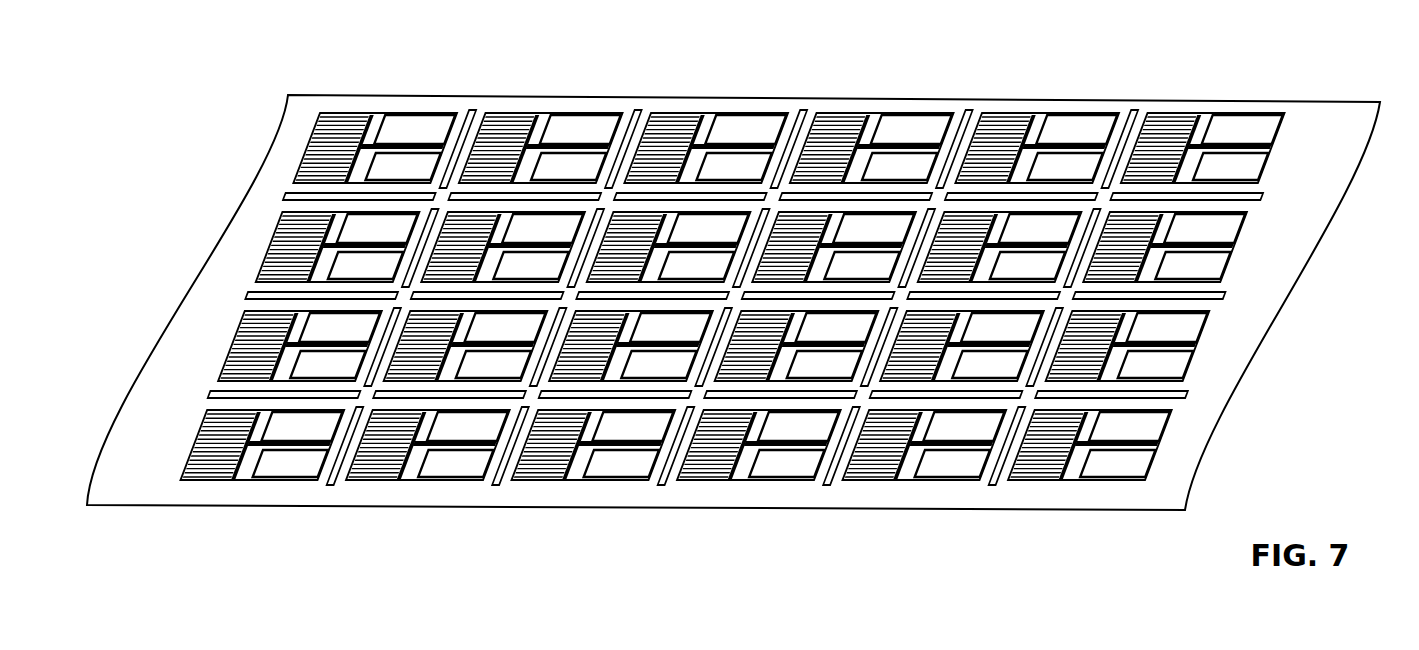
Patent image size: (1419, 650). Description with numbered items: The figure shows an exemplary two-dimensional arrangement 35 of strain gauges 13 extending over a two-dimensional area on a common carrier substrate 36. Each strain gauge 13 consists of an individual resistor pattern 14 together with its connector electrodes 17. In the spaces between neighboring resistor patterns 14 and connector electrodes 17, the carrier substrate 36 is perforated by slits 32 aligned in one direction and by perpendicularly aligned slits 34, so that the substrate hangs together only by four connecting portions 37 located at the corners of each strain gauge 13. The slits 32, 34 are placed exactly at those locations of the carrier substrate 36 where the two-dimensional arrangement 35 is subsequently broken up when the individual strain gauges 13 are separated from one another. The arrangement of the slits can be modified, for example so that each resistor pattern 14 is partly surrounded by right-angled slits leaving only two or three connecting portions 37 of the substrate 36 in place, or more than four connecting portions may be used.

The strain gauge 13 is at (865, 110).
The resistor pattern 14 is at (1163, 140).
The connector electrodes 17 is at (1232, 168).
The slits 32 is at (973, 112).
The perpendicularly aligned slits 34 is at (1227, 298).
The two-dimensional arrangement 35 is at (733, 269).
The carrier substrate 36 is at (733, 302).
The connecting portions 37 is at (1105, 198).